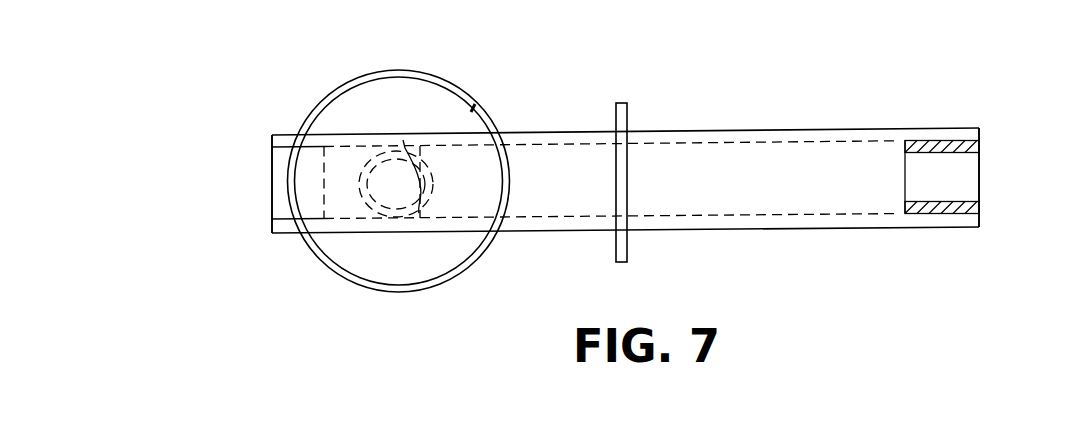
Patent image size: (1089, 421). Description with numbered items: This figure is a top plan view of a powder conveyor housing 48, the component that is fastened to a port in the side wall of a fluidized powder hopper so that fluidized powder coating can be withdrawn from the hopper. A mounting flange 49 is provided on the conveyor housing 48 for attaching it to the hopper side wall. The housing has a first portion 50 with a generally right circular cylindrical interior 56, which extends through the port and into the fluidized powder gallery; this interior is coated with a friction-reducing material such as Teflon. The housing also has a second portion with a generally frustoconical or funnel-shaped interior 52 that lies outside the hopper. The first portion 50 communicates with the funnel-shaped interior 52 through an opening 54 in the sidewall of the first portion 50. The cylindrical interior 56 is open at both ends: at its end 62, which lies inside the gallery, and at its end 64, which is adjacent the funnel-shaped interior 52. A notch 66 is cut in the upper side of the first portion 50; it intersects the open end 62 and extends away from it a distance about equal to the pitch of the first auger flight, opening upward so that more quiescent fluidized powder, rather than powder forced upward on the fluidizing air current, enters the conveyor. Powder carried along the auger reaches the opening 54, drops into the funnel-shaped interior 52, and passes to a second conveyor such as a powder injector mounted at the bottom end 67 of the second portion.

The powder conveyor housing 48 is at (323, 293).
The mounting flange 49 is at (616, 118).
The first portion 50 is at (818, 229).
The funnel-shaped interior 52 is at (400, 270).
The opening 54 is at (403, 140).
The right circular cylindrical interior 56 is at (775, 144).
The end 62 is at (979, 160).
The end 64 is at (272, 187).
The notch 66 is at (905, 160).
The bottom end 67 is at (430, 158).